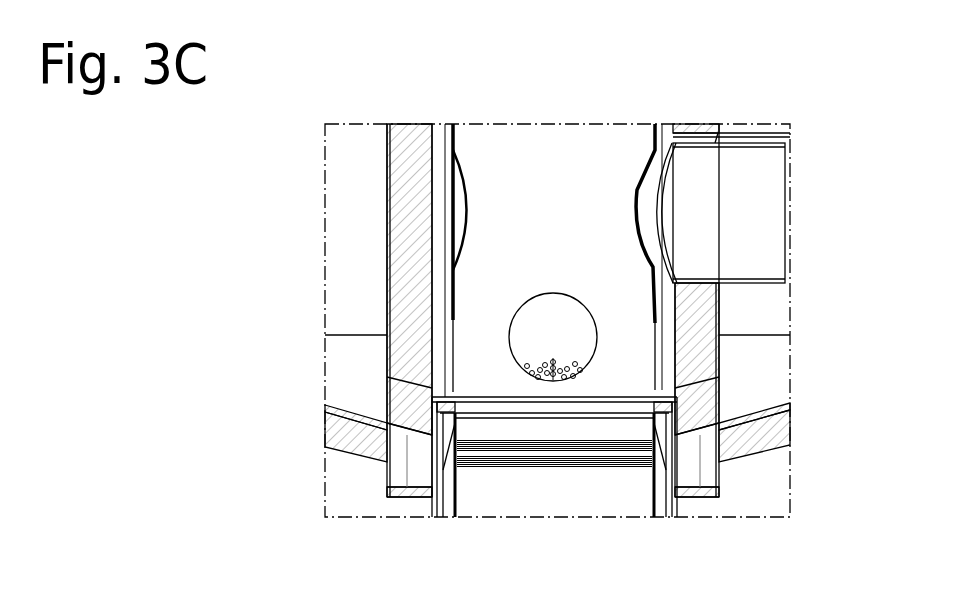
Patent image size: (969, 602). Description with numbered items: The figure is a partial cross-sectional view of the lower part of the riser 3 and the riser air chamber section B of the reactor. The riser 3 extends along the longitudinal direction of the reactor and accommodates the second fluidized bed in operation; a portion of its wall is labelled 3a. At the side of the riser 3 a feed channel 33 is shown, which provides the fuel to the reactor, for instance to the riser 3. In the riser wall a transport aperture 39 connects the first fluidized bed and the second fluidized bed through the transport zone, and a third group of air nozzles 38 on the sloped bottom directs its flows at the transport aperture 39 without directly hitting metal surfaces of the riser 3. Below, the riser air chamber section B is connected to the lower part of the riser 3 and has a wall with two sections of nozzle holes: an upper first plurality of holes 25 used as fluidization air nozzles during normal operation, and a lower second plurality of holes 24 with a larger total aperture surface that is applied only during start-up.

The riser 3 is at (476, 158).
The inner liner section 3a is at (638, 187).
The feed channel 33 is at (750, 186).
The transport aperture 39 is at (564, 312).
The third group of air nozzles 38 is at (526, 367).
The first plurality of holes 25 is at (503, 423).
The second plurality of holes 24 is at (572, 467).
The riser air chamber section B is at (666, 527).